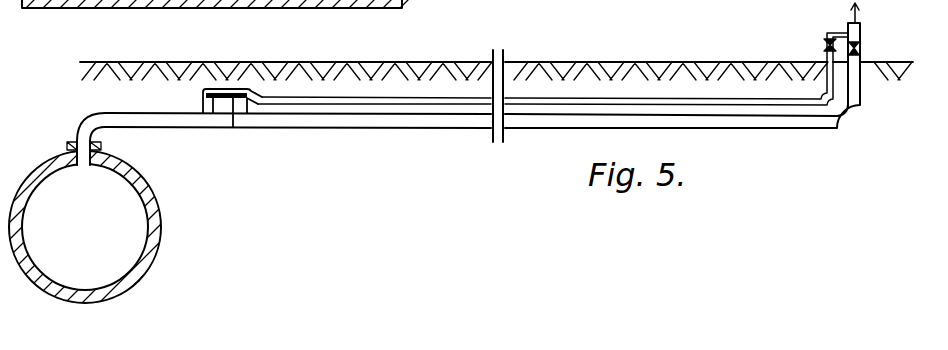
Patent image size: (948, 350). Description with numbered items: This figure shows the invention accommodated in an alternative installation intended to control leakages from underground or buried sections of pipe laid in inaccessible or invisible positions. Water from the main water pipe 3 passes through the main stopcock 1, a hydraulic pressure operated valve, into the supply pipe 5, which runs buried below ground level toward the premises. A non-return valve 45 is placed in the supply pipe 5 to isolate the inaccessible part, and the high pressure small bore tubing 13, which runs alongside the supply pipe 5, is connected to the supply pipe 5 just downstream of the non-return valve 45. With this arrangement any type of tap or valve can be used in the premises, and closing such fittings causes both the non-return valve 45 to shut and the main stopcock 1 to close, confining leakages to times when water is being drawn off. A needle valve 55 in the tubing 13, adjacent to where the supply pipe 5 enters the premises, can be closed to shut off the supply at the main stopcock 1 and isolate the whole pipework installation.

The main stopcock 1 is at (194, 98).
The main water pipe 3 is at (92, 252).
The supply pipe 5 is at (296, 128).
The small bore tubing 13 is at (593, 98).
The non-return valve 45 is at (862, 42).
The needle valve 55 is at (823, 44).